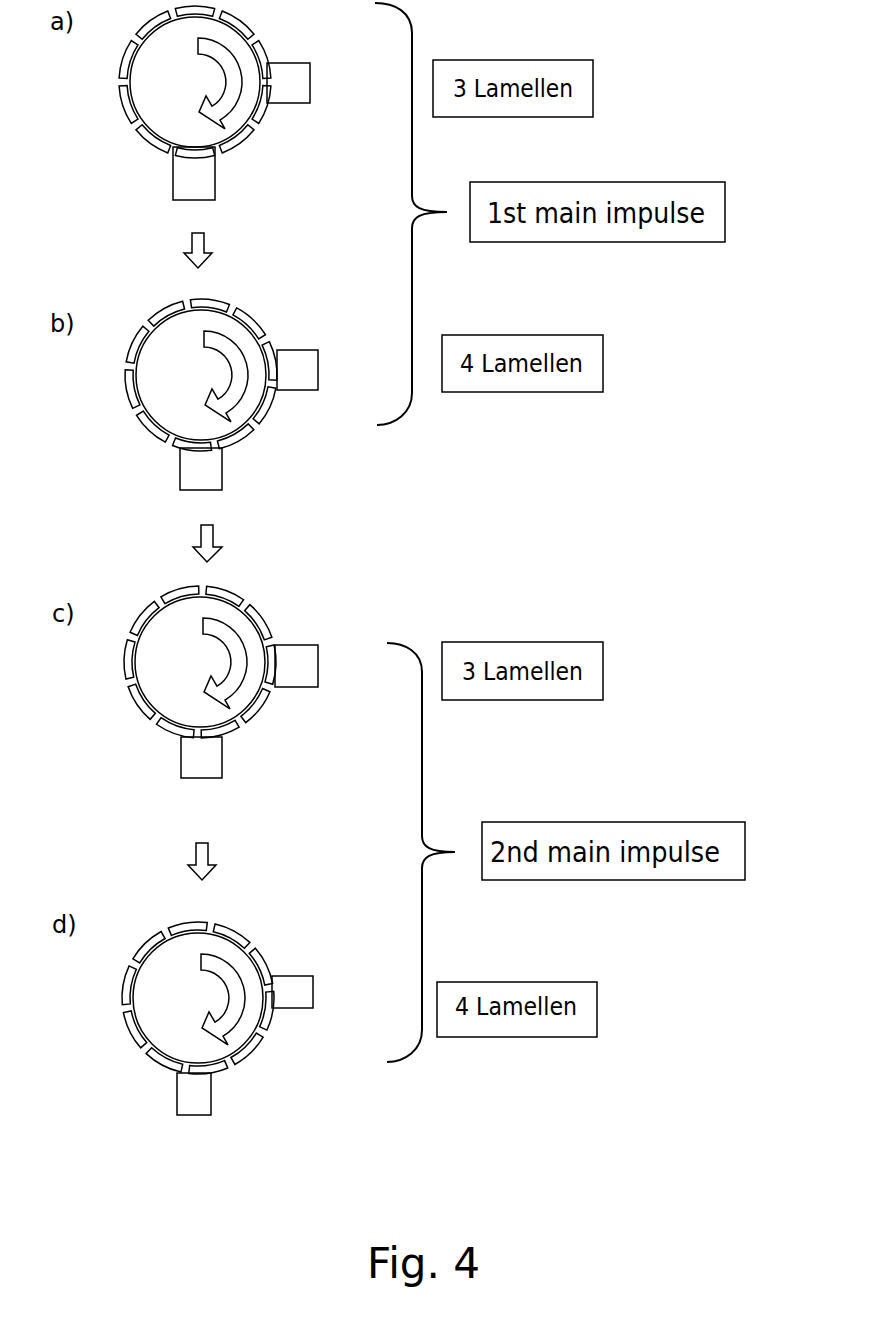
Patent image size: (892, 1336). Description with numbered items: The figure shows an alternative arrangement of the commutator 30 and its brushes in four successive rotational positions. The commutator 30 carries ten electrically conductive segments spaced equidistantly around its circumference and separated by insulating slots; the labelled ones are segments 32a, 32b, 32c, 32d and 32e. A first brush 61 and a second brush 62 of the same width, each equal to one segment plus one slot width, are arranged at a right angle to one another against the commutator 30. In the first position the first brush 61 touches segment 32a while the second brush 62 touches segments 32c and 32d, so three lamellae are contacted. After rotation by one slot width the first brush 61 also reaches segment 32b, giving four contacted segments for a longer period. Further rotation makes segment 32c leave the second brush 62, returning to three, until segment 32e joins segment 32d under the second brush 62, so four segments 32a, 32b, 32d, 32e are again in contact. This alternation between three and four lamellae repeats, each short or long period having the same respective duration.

The commutator 30 is at (204, 89).
The segment 32a is at (195, 152).
The segment 32b is at (237, 133).
The segment 32c is at (263, 113).
The segment 32d is at (258, 55).
The segment 32e is at (263, 622).
The first brush 61 is at (195, 190).
The second brush 62 is at (305, 82).